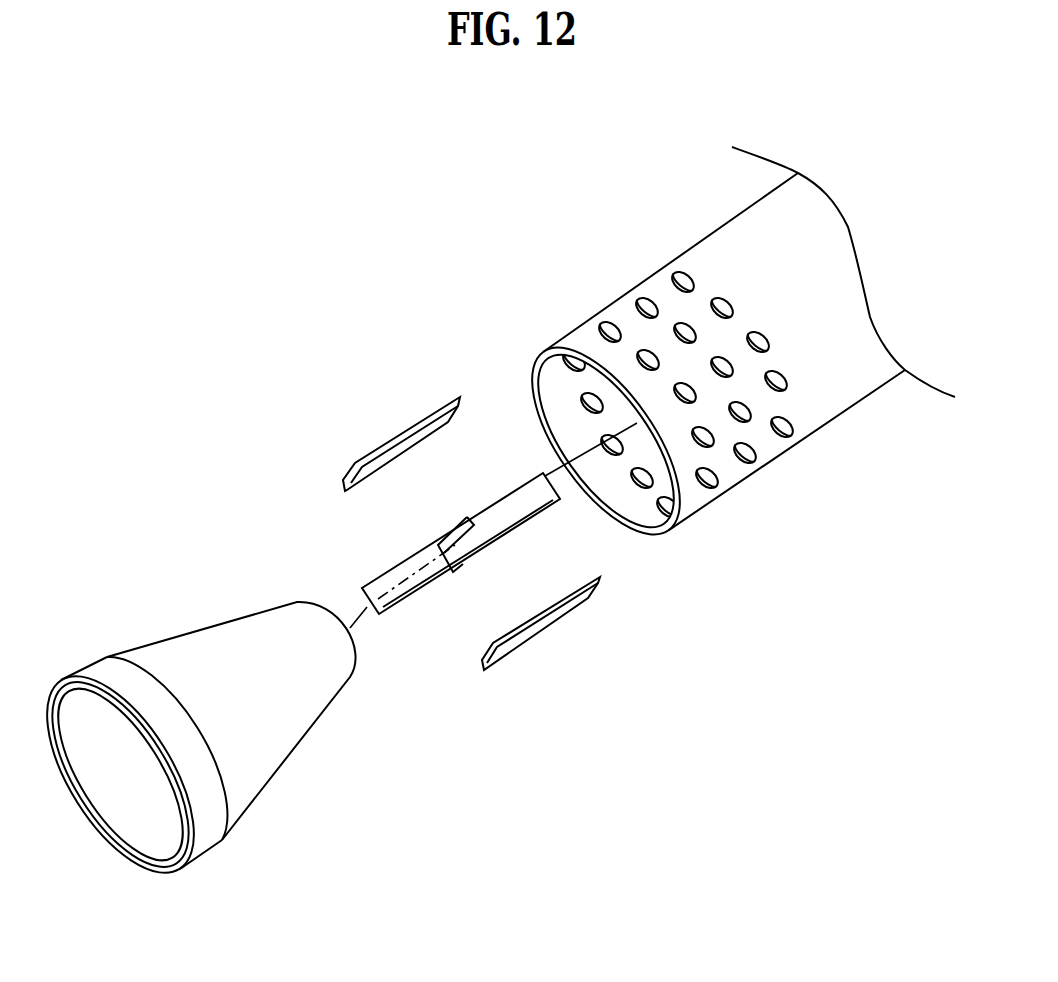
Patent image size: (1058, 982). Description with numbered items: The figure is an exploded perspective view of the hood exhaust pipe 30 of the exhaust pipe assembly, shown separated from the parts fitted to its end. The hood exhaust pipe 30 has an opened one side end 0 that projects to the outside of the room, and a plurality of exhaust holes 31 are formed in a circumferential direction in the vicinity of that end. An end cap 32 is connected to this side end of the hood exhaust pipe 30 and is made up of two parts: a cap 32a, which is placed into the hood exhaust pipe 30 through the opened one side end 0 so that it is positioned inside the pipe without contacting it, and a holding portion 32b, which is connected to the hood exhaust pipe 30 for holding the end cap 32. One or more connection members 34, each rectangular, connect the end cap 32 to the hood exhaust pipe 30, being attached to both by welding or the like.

The opened one side end 0 is at (530, 383).
The hood exhaust pipe 30 is at (877, 470).
The exhaust holes 31 is at (755, 460).
The end cap 32 is at (187, 686).
The cap 32a is at (193, 655).
The holding portion 32b is at (95, 675).
The connection member 34 is at (380, 458).